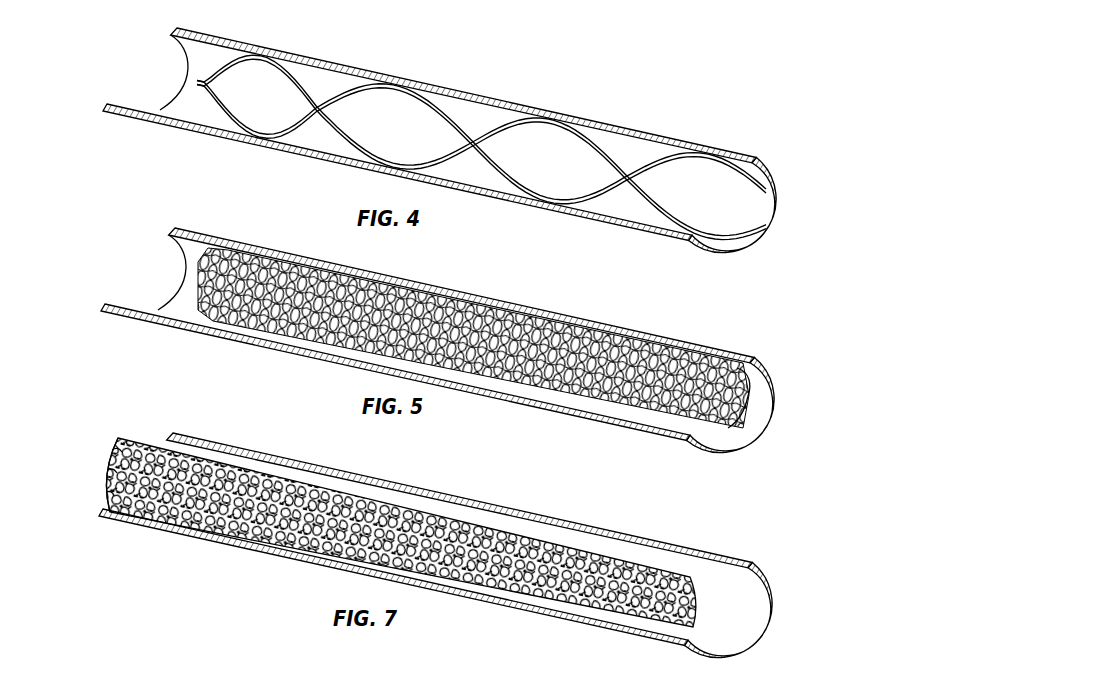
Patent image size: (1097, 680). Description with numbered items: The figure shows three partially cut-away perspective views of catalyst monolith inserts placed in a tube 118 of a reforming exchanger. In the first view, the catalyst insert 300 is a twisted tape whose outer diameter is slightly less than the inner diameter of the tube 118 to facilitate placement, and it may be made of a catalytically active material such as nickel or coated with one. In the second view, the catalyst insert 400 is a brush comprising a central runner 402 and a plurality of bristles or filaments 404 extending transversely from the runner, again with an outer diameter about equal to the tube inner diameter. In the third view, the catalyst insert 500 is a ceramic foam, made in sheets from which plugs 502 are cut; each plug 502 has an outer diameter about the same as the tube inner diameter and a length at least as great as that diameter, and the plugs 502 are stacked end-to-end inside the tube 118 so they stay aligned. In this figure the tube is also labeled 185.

In FIG. 4, the tube 118 is at (643, 127).
In FIG. 4, the catalyst insert 300 is at (658, 178).
In FIG. 5, the tubular member 185 is at (640, 332).
In FIG. 7, the tubular member 185 is at (725, 552).
In FIG. 5, the catalyst insert 400 is at (675, 339).
In FIG. 5, the bristles or filaments 404 is at (745, 375).
In FIG. 5, the central runner 402 is at (735, 400).
In FIG. 7, the catalyst insert 500 is at (643, 545).
In FIG. 7, the plugs 502 is at (140, 438).